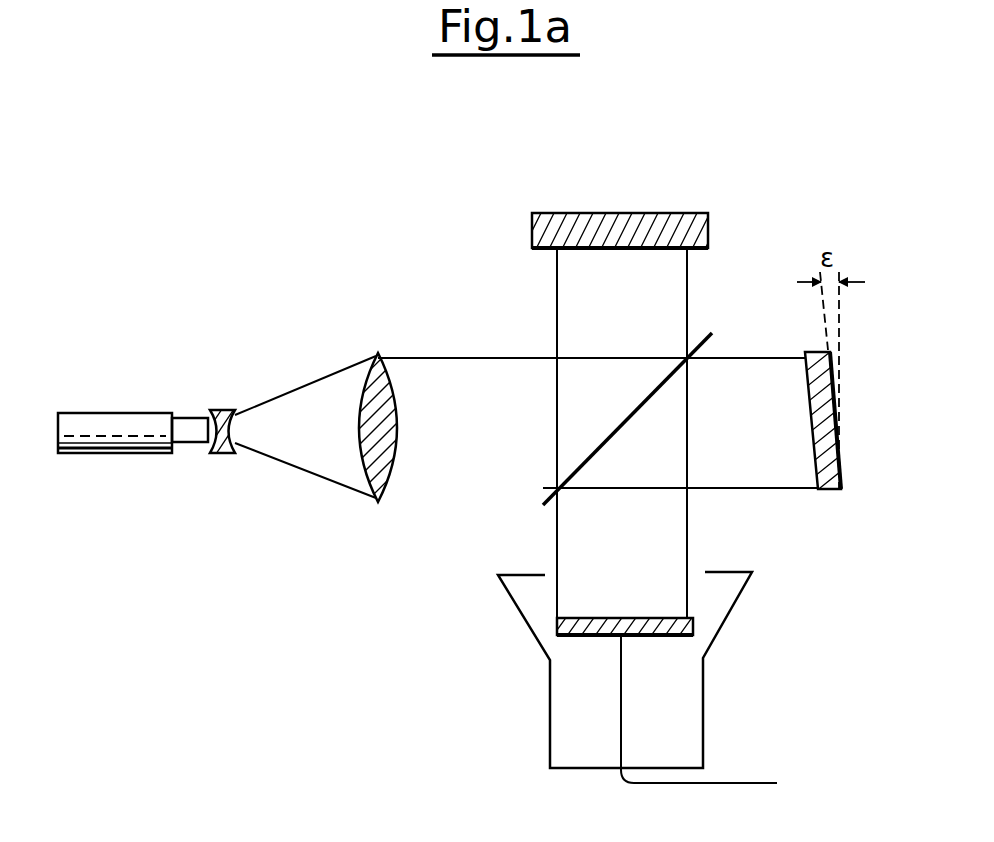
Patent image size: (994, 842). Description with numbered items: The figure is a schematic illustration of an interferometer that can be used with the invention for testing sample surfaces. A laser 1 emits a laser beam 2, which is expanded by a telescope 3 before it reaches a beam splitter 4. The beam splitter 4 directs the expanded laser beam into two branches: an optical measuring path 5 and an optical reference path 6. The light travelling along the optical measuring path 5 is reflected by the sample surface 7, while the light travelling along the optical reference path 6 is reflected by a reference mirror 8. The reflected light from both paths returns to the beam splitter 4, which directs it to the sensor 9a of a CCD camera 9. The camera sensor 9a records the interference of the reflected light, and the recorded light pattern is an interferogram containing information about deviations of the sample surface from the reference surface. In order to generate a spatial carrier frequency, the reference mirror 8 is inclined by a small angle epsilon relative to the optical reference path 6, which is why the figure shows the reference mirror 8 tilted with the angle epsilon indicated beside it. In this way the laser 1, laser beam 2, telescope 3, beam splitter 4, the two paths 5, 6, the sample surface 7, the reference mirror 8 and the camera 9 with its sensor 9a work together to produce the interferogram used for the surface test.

The laser 1 is at (115, 413).
The laser beam 2 is at (188, 418).
The telescope 3 is at (376, 353).
The beam splitter 4 is at (698, 346).
The optical measuring path 5 is at (670, 287).
The optical reference path 6 is at (780, 478).
The sample surface 7 is at (540, 250).
The reference mirror 8 is at (805, 372).
The CCD camera 9 is at (745, 592).
The sensor 9a is at (683, 618).